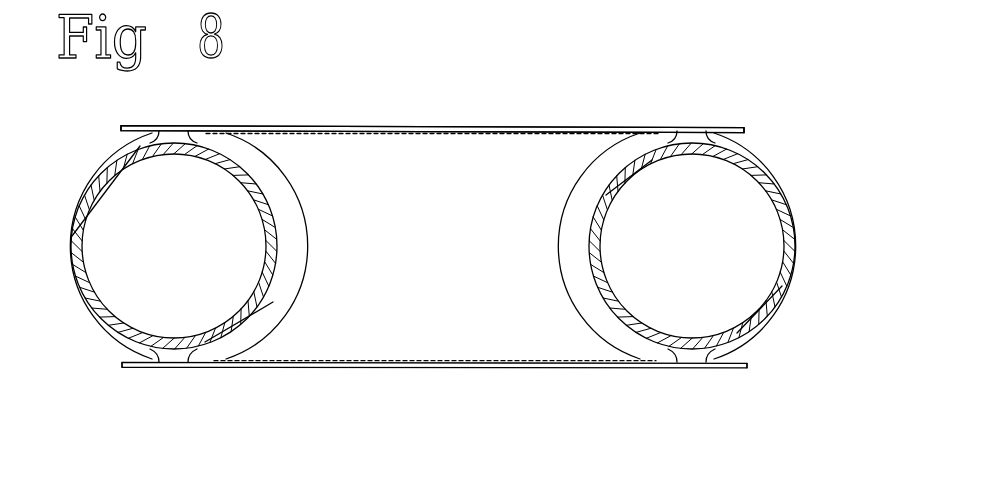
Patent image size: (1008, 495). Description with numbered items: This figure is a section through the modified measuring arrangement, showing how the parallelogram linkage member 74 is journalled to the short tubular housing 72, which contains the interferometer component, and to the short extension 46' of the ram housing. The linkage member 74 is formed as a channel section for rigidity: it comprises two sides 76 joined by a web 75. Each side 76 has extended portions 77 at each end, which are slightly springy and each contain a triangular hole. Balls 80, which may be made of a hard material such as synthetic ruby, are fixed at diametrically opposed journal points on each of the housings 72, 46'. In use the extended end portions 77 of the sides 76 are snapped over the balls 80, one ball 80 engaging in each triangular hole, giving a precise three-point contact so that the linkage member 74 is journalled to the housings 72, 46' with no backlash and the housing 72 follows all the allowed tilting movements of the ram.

The extension of the housing 46' is at (479, 246).
The tubular housing 72 is at (70, 238).
The parallelogram linkage member 74 is at (523, 120).
The web 75 is at (462, 168).
The sides 76 is at (345, 126).
The extended portions 77 is at (127, 125).
The balls 80 is at (172, 137).